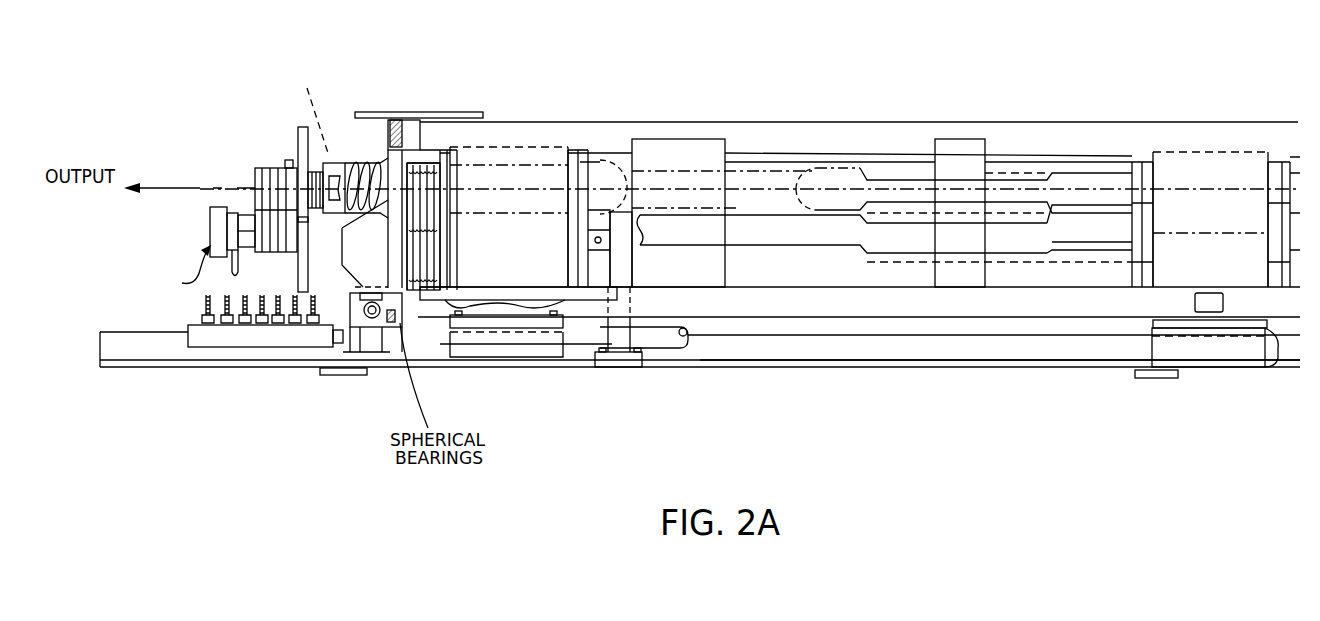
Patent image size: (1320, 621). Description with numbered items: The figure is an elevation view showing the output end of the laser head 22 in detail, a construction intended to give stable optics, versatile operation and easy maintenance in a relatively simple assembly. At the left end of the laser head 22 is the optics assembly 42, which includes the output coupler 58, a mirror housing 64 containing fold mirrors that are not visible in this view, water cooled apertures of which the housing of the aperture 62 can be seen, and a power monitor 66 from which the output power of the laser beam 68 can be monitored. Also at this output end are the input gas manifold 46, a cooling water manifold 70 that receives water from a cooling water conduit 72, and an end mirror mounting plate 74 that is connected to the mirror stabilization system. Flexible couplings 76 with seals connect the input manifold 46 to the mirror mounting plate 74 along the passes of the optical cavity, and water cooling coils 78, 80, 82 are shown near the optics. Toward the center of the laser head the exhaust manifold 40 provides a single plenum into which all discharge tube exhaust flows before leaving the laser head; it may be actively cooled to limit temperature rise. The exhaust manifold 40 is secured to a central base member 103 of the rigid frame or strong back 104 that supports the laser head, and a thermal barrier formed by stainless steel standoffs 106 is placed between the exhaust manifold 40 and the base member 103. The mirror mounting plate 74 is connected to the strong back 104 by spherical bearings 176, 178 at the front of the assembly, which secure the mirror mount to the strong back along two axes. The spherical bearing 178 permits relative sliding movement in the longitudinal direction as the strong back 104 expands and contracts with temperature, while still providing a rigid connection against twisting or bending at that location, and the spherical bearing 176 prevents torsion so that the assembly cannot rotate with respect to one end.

The laser head 22 is at (1042, 94).
The exhaust manifold 40 is at (1192, 165).
The optics assembly 42 is at (381, 106).
The input gas manifold 46 is at (526, 160).
The output coupler 58 is at (268, 168).
The aperture housing 62 is at (335, 172).
The mirror housing 64 is at (355, 278).
The power monitor 66 is at (212, 237).
The laser beam 68 is at (197, 185).
The cooling water manifold 70 is at (226, 345).
The cooling water conduit 72 is at (666, 345).
The end mirror mounting plate 74 is at (388, 158).
The flexible couplings 76 is at (427, 163).
The water cooling coil 78 is at (351, 173).
The water cooling coil 80 is at (288, 160).
The water cooling coil 82 is at (236, 262).
The central base member 103 is at (1165, 355).
The strong back 104 is at (943, 358).
The stainless steel standoffs 106 is at (1157, 327).
The spherical bearing 176 is at (372, 318).
The spherical bearing 178 is at (393, 317).